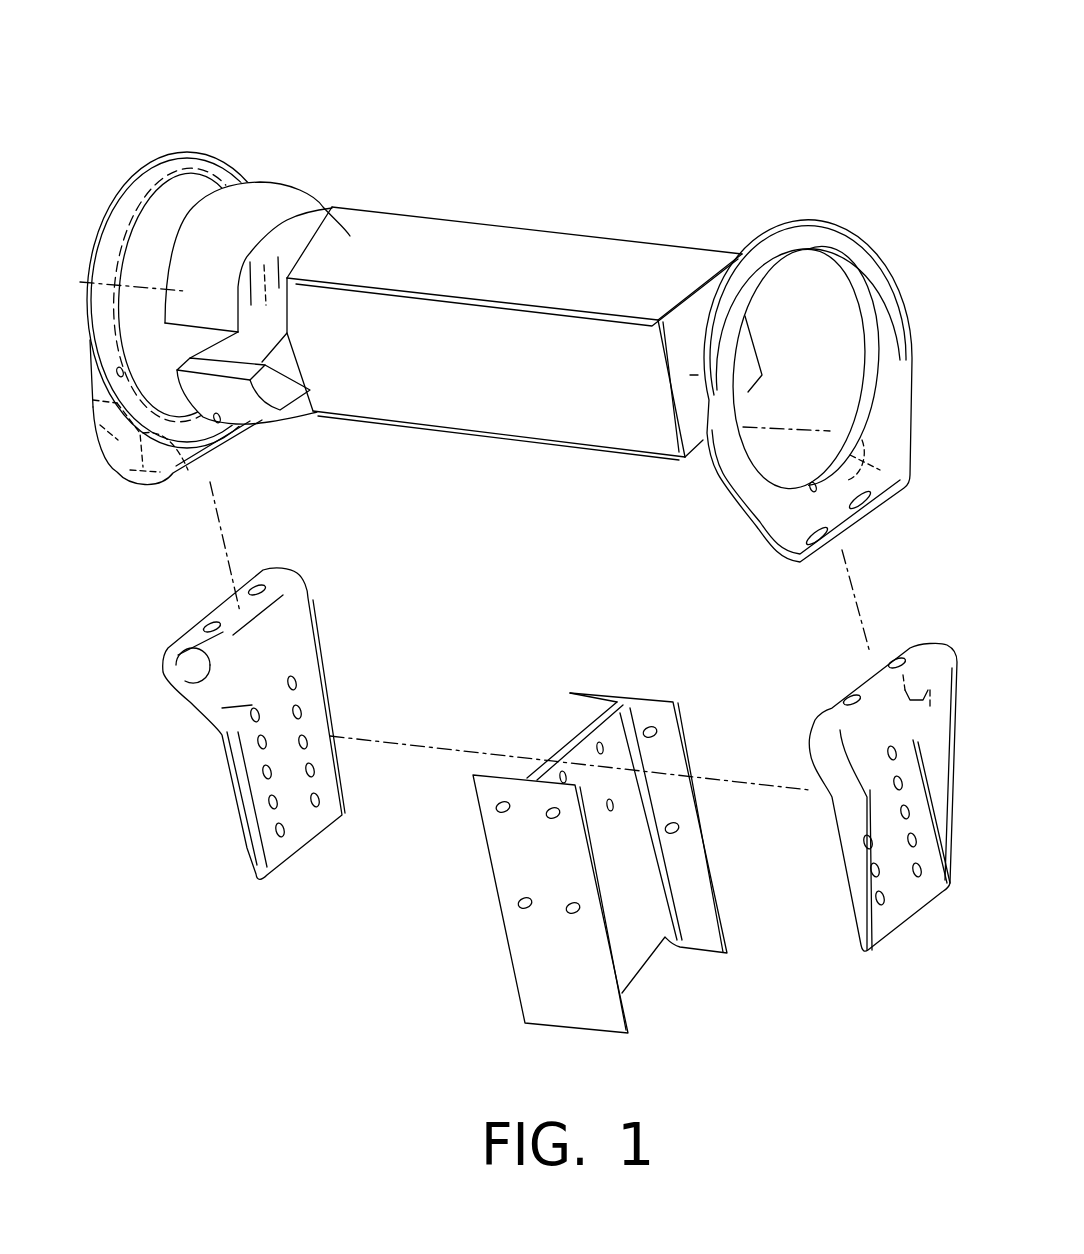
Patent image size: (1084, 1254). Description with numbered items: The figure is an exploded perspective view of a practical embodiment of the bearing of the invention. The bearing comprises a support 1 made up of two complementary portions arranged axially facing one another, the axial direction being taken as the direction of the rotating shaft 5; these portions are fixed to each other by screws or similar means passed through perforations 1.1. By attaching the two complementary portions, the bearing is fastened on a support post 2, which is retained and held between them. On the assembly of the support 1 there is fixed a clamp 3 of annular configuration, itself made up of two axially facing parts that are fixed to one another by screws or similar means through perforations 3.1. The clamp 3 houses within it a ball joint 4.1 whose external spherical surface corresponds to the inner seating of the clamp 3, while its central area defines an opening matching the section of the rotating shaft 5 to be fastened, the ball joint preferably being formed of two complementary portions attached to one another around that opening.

The support 1 is at (230, 768).
The perforations 1.1 is at (253, 713).
The support post 2 is at (638, 933).
The clamp 3 is at (177, 162).
The perforations 3.1 is at (215, 418).
The ball joint 4.1 is at (262, 200).
The rotating shaft 5 is at (562, 258).